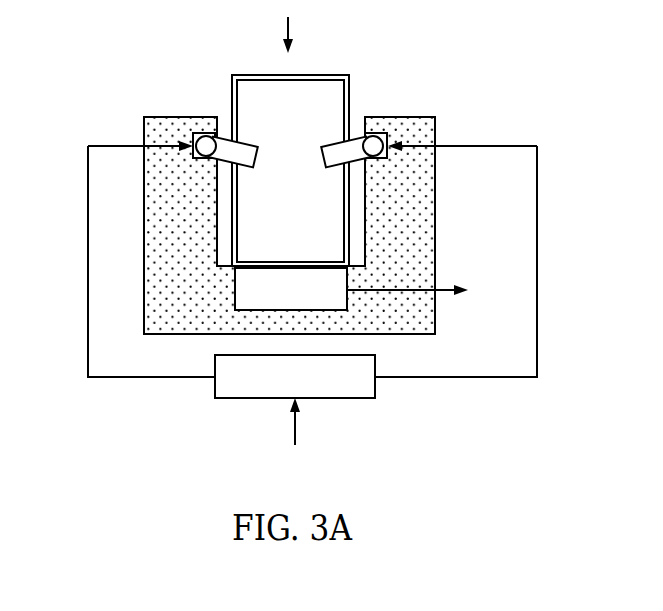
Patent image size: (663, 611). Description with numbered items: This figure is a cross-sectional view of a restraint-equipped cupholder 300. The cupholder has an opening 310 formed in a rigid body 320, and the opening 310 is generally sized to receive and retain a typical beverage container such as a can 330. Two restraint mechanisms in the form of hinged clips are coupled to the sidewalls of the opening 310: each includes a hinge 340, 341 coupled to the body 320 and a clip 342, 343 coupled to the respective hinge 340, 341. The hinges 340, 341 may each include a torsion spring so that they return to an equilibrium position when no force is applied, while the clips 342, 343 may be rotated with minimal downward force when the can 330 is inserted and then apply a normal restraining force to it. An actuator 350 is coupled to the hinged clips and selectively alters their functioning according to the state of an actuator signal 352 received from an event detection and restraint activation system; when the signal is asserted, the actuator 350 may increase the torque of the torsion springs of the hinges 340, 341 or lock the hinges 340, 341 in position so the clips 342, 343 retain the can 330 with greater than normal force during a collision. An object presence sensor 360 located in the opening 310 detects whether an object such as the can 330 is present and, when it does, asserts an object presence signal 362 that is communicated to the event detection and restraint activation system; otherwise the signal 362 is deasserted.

The restraint-equipped cupholder 300 is at (100, 48).
The opening 310 is at (291, 26).
The rigid body 320 is at (435, 127).
The can 330 is at (290, 75).
The hinge 340 is at (205, 145).
The hinge 341 is at (373, 145).
The clip 342 is at (228, 137).
The clip 343 is at (353, 138).
The actuator 350 is at (365, 400).
The actuator signal 352 is at (297, 418).
The object presence sensor 360 is at (235, 288).
The object presence signal 362 is at (444, 285).